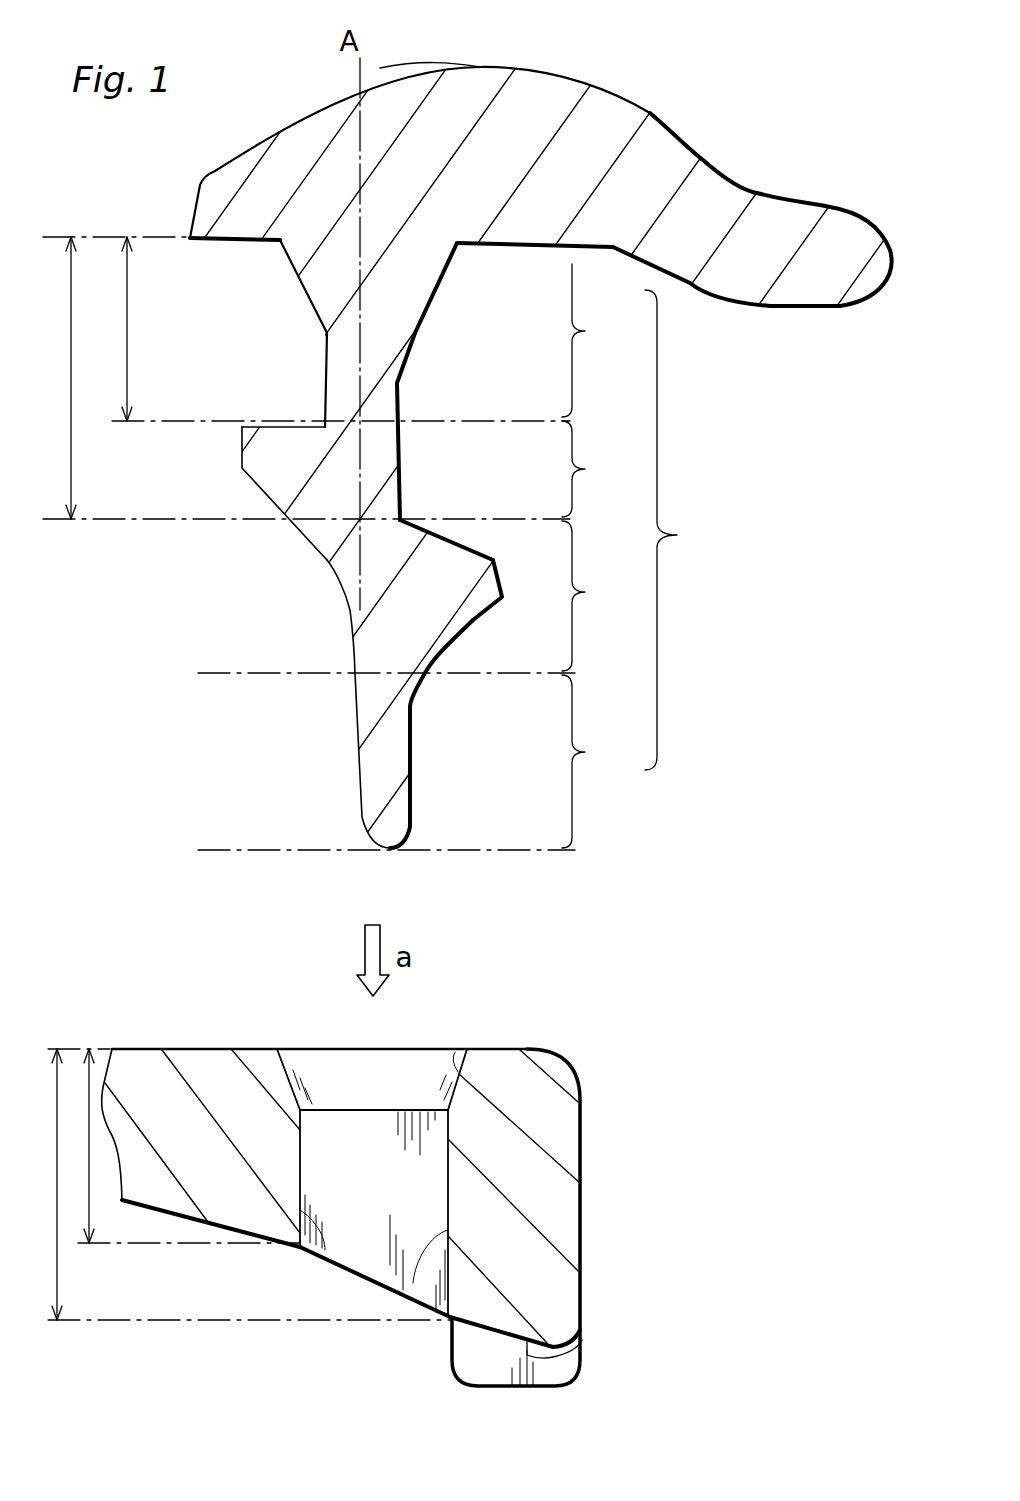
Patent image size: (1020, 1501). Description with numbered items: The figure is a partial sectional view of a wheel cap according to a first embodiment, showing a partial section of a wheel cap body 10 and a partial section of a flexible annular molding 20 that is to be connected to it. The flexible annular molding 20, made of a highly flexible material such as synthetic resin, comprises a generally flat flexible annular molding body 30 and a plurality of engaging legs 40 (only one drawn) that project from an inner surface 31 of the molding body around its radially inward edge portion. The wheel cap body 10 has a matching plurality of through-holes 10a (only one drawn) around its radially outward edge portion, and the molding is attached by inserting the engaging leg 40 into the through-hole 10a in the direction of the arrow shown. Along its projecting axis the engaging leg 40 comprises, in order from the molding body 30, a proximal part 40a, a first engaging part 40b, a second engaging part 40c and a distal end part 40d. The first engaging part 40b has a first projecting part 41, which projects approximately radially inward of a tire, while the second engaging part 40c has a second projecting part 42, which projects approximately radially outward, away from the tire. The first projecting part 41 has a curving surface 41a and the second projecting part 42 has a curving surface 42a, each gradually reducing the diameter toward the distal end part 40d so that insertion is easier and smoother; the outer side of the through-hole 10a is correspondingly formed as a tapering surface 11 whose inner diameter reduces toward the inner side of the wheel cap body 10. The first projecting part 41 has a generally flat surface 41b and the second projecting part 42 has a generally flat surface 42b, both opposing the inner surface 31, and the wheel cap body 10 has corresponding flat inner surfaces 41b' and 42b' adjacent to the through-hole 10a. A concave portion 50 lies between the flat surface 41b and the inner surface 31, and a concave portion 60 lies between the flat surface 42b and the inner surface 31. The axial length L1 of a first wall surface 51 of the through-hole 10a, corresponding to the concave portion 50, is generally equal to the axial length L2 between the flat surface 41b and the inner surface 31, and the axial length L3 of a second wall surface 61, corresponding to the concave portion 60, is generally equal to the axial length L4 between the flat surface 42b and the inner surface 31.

The wheel cap body 10 is at (195, 1030).
The through-hole 10a is at (317, 1033).
The tapering surface 11 is at (455, 1050).
The flexible annular molding 20 is at (662, 78).
The flexible annular molding body 30 is at (437, 80).
The inner surface 31 is at (237, 243).
The engaging leg 40 is at (539, 569).
The proximal part 40a is at (604, 340).
The first engaging part 40b is at (604, 469).
The second engaging part 40c is at (421, 597).
The distal end part 40d is at (606, 761).
The first projecting part 41 is at (241, 452).
The curving surface 41a is at (272, 505).
The flat surface 41b is at (283, 396).
The second projecting part 42 is at (503, 582).
The curving surface 42a is at (470, 632).
The flat surface 42b is at (446, 513).
The concave portion 50 is at (262, 352).
The first wall surface 51 is at (327, 1232).
The concave portion 60 is at (462, 383).
The second wall surface 61 is at (413, 1283).
The flat inner surface 41b' is at (189, 1287).
The flat inner surface 42b' is at (564, 1299).
The axial length L1 is at (85, 1146).
The axial length L2 is at (126, 329).
The axial length L3 is at (60, 1184).
The axial length L4 is at (72, 378).